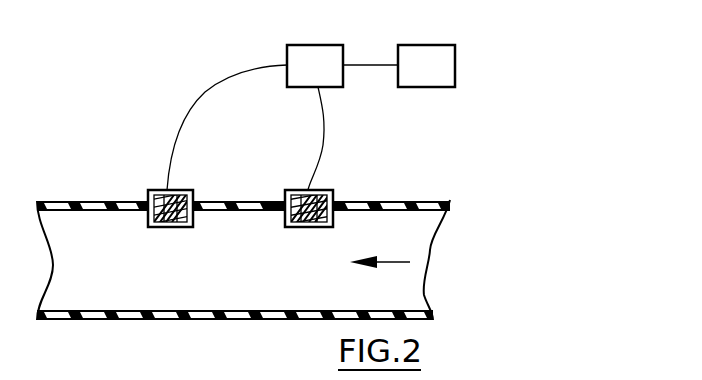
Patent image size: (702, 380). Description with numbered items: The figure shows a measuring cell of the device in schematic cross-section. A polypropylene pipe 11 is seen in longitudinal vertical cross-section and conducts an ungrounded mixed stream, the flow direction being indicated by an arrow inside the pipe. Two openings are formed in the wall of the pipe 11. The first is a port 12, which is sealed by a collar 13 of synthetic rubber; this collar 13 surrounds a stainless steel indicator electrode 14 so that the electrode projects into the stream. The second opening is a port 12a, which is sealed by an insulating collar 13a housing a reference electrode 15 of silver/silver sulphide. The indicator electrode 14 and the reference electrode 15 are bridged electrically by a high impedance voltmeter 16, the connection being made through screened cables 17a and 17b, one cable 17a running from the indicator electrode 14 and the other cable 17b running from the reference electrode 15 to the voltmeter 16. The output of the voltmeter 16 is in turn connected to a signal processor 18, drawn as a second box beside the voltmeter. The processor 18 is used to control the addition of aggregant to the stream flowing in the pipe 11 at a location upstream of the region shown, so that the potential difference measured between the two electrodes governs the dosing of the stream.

The polypropylene pipe 11 is at (127, 310).
The port 12 is at (145, 195).
The port 12a is at (282, 191).
The collar 13 is at (155, 190).
The insulating collar 13a is at (338, 191).
The indicator electrode 14 is at (177, 188).
The reference electrode 15 is at (310, 227).
The high impedance voltmeter 16 is at (328, 55).
The screened cable 17a is at (188, 107).
The screened cable 17b is at (327, 120).
The signal processor 18 is at (427, 55).